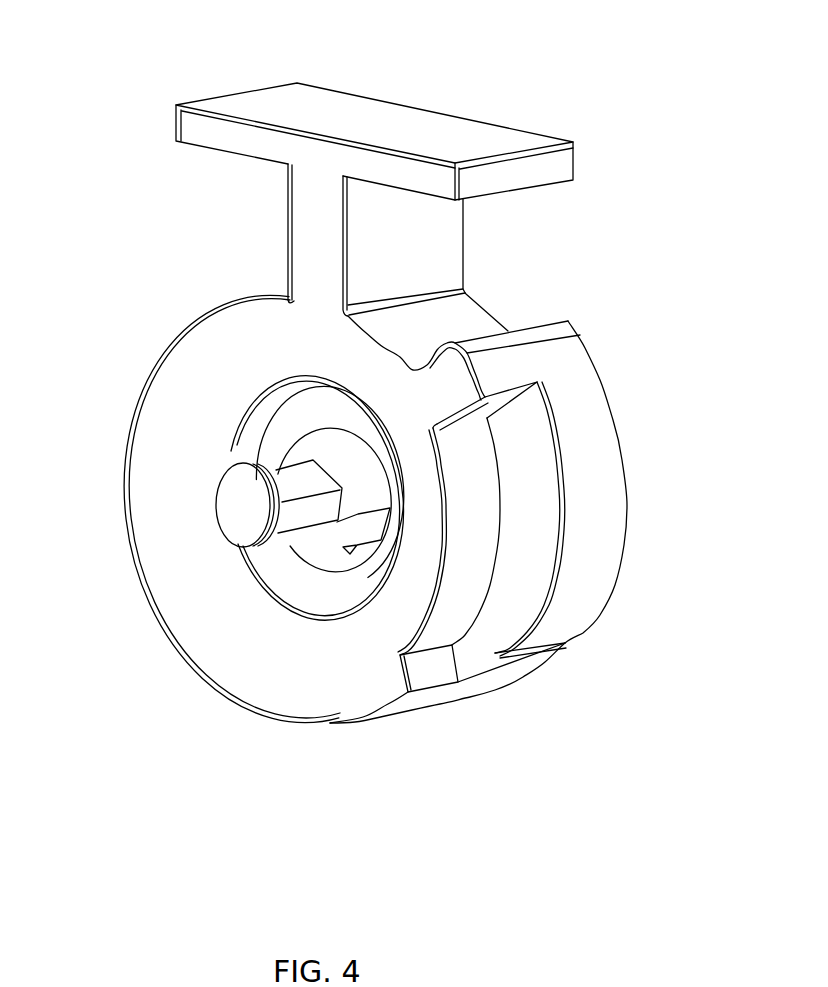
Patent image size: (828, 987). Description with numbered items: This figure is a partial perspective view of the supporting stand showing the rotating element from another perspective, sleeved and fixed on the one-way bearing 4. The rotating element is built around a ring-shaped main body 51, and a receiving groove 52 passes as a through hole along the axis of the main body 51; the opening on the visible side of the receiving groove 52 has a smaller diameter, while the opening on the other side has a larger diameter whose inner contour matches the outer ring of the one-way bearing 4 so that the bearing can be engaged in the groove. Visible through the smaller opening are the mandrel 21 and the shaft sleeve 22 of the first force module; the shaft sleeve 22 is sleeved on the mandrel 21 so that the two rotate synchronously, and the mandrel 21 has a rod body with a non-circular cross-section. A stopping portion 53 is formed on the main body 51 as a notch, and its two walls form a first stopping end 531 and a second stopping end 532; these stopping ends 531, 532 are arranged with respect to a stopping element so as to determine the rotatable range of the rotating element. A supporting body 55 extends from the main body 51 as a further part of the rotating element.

The one-way bearing 4 is at (337, 565).
The mandrel 21 is at (243, 508).
The shaft sleeve 22 is at (307, 452).
The ring-shaped main body 51 is at (207, 341).
The receiving groove 52 is at (305, 415).
The stopping portion 53 is at (530, 543).
The first stopping end 531 is at (493, 405).
The second stopping end 532 is at (430, 668).
The supporting body 55 is at (414, 125).